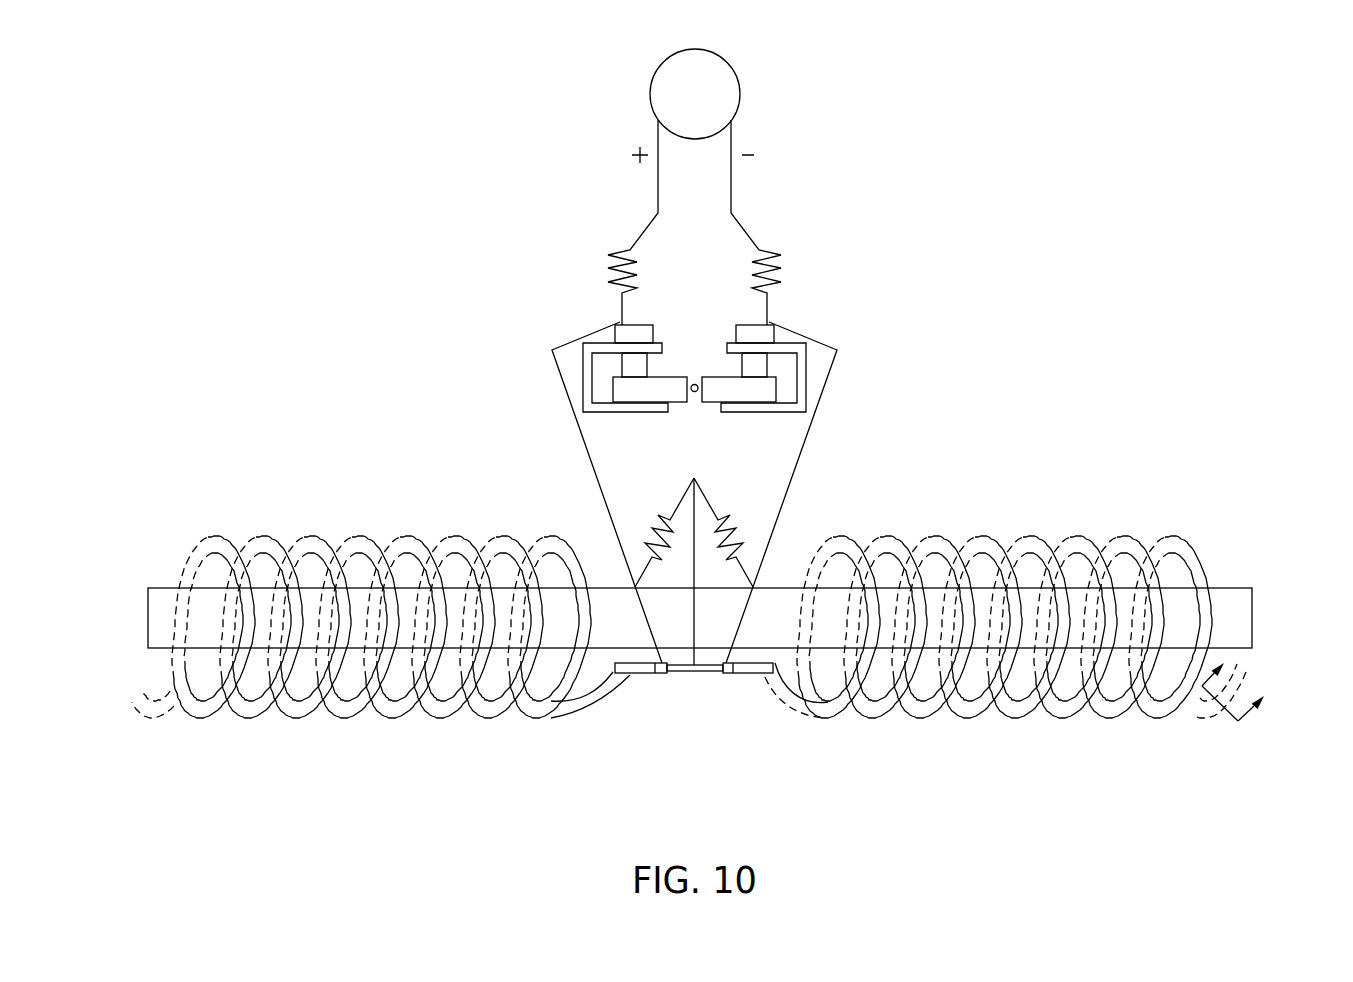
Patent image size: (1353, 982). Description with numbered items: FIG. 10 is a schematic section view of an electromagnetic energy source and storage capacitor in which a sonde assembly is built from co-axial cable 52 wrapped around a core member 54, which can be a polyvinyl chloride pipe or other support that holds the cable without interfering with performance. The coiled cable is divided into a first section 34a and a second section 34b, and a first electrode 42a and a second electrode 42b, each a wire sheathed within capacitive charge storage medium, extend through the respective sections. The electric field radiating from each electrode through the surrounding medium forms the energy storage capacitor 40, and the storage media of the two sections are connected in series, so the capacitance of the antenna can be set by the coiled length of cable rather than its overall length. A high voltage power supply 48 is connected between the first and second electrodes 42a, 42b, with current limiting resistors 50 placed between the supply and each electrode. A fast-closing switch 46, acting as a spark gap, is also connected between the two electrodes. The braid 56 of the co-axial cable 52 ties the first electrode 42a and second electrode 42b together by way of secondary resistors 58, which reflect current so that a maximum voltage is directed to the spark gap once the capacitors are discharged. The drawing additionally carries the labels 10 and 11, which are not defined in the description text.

The sensor assembly 10 is at (1072, 375).
The section line 11 is at (1244, 719).
The first section 34a is at (1075, 761).
The second section 34b is at (381, 628).
The energy storage capacitor 40 is at (540, 819).
The first electrode 42a is at (752, 675).
The second electrode 42b is at (637, 675).
The fast-closing switch 46 is at (696, 384).
The high voltage power supply 48 is at (733, 70).
The current limiting resistors 50 is at (770, 250).
The co-axial cable 52 is at (312, 537).
The core member 54 is at (1245, 610).
The braid 56 is at (758, 628).
The secondary resistors 58 is at (741, 545).